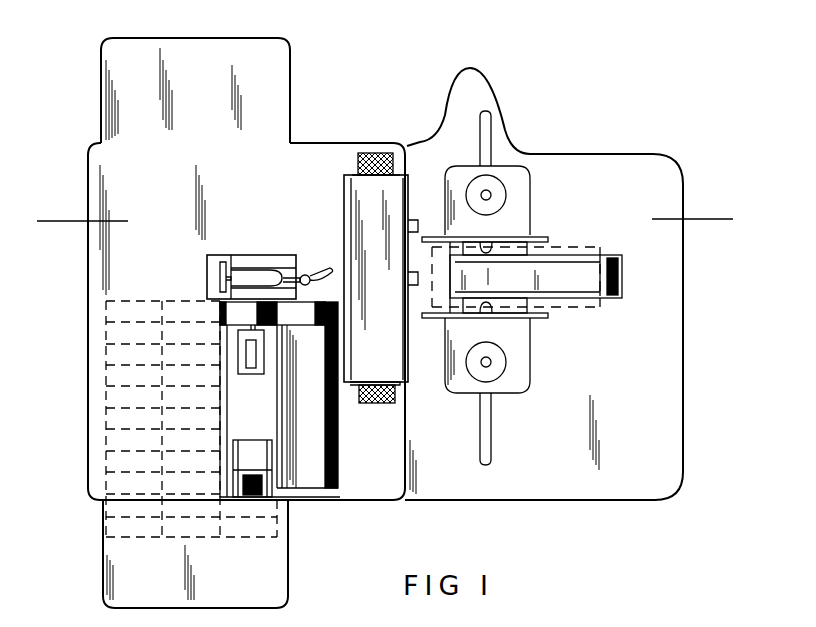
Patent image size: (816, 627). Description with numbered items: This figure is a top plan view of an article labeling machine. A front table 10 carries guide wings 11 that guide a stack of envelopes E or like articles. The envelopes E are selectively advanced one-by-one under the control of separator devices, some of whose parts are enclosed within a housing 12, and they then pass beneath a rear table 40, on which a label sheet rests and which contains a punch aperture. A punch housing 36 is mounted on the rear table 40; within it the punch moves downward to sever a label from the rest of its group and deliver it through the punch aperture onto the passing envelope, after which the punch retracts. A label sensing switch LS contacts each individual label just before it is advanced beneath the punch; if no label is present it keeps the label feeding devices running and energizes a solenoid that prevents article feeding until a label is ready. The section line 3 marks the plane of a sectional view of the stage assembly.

The front table 10 is at (668, 398).
The rear table 40 is at (90, 274).
The housing 12 is at (381, 278).
The guide wings 11 is at (535, 237).
The envelopes E is at (597, 300).
The punch housing 36 is at (236, 257).
The label sensing switch LS is at (255, 360).
The section line 3 is at (53, 248).